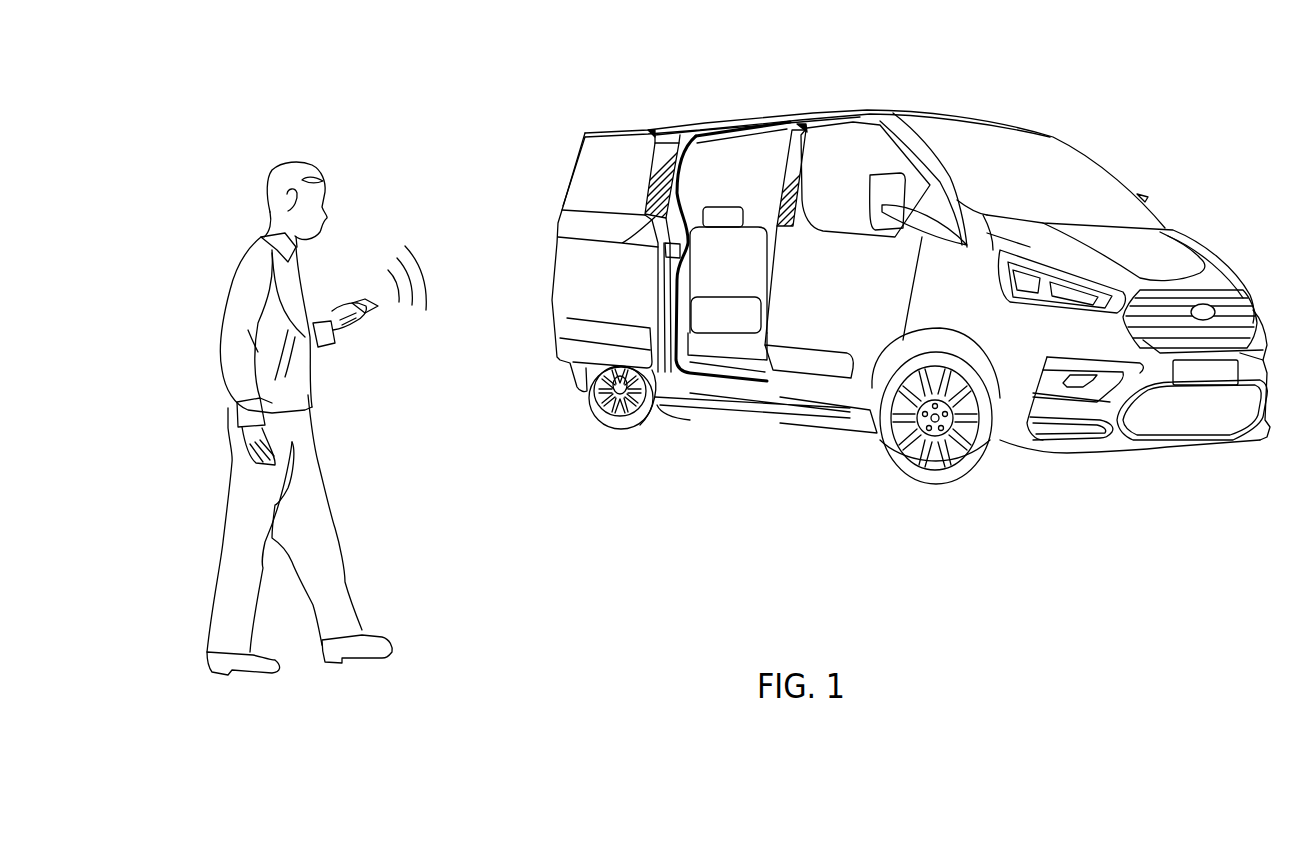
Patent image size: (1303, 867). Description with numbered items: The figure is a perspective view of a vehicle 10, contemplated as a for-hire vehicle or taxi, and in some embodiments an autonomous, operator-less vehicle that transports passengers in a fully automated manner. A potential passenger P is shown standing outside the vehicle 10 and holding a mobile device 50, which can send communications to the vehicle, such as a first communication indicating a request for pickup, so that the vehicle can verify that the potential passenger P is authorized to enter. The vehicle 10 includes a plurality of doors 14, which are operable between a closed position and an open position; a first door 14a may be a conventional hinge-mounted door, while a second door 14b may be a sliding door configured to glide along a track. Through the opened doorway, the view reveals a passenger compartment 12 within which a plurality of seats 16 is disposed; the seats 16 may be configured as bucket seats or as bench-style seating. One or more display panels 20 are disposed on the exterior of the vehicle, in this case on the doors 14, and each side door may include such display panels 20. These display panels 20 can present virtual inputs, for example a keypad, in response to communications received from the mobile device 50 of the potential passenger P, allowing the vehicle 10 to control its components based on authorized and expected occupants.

The vehicle 10 is at (1196, 84).
The passenger compartment 12 is at (753, 181).
The doors 14 is at (667, 319).
The first door 14a is at (833, 387).
The second door 14b is at (597, 313).
The seats 16 is at (756, 272).
The display panels 20 is at (558, 233).
The mobile device 50 is at (365, 300).
The potential passenger P is at (253, 266).